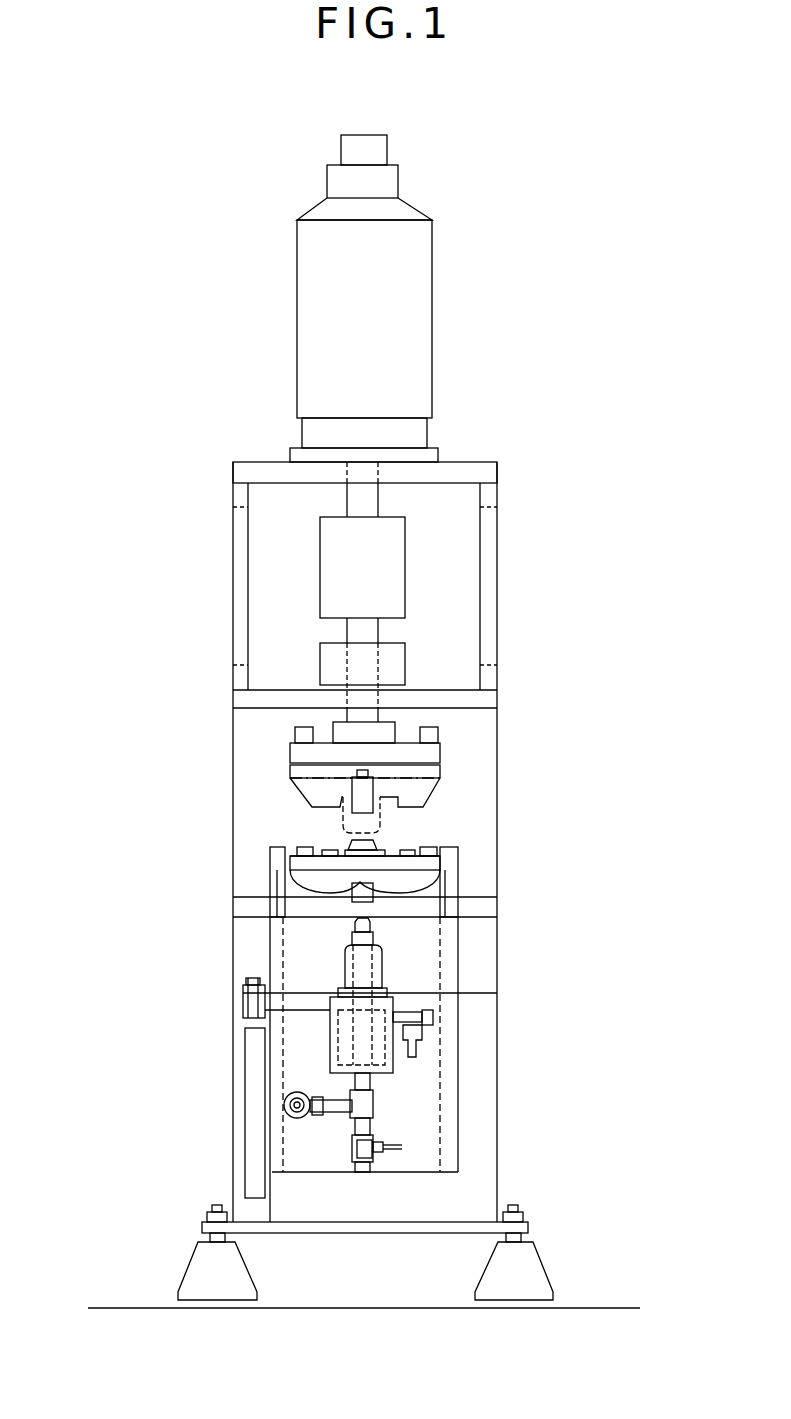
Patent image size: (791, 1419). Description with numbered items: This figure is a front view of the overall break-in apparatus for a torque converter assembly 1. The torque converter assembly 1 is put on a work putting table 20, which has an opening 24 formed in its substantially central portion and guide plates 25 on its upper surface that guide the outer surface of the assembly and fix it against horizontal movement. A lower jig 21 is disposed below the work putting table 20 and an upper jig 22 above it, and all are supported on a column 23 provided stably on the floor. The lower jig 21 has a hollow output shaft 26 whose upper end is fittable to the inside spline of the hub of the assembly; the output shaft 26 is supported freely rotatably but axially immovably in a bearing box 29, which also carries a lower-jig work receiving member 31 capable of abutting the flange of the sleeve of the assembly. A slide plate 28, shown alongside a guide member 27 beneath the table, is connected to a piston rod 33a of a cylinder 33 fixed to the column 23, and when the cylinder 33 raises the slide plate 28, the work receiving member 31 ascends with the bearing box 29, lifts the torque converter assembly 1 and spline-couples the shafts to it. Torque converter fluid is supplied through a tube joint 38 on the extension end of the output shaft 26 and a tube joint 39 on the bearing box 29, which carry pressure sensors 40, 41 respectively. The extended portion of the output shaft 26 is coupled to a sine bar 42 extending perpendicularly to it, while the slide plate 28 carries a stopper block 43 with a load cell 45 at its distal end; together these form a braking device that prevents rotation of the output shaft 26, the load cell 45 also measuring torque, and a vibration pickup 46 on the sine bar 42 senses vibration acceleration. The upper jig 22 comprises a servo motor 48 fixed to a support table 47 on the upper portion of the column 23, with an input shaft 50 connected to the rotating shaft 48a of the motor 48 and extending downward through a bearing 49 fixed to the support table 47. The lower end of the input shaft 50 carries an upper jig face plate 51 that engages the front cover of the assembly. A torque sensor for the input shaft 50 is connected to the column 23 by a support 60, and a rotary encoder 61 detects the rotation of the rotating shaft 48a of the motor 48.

The torque converter assembly 1 is at (442, 770).
The work putting table 20 is at (243, 908).
The lower jig 21 is at (175, 993).
The upper jig 22 is at (222, 608).
The column 23 is at (222, 753).
The opening 24 is at (388, 917).
The guide plates 25 is at (270, 882).
The output shaft 26 is at (375, 1125).
The guide rod 27 is at (268, 955).
The slide plate 28 is at (458, 1152).
The bearing box 29 is at (330, 1055).
The lower-jig work receiving member 31 is at (380, 828).
The cylinder 33 is at (245, 1060).
The piston rod 33a is at (243, 1022).
The tube joint 38 is at (373, 1165).
The tube joint 39 is at (393, 1012).
The pressure sensor 40 is at (392, 1150).
The pressure sensor 41 is at (416, 1052).
The sine bar 42 is at (352, 1113).
The stopper block 43 is at (292, 1157).
The load cell 45 is at (284, 1105).
The vibration pickup 46 is at (318, 1115).
The support table 47 is at (237, 528).
The motor 48 is at (432, 287).
The rotating shaft 48a is at (380, 503).
The bearing 49 is at (405, 663).
The input shaft 50 is at (380, 637).
The upper jig face plate 51 is at (440, 750).
The support 60 is at (405, 573).
The rotary encoder 61 is at (372, 153).